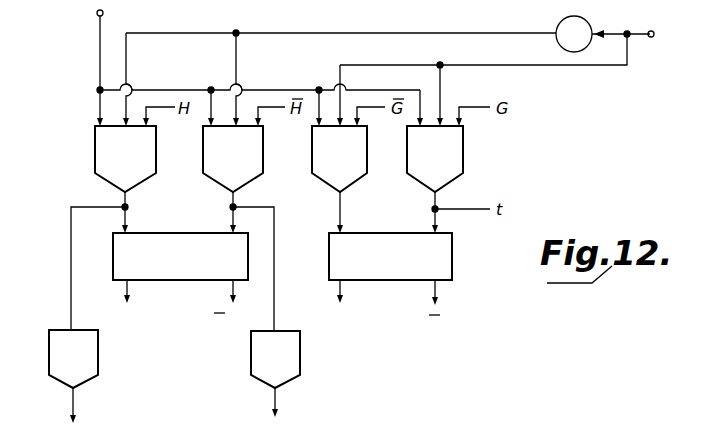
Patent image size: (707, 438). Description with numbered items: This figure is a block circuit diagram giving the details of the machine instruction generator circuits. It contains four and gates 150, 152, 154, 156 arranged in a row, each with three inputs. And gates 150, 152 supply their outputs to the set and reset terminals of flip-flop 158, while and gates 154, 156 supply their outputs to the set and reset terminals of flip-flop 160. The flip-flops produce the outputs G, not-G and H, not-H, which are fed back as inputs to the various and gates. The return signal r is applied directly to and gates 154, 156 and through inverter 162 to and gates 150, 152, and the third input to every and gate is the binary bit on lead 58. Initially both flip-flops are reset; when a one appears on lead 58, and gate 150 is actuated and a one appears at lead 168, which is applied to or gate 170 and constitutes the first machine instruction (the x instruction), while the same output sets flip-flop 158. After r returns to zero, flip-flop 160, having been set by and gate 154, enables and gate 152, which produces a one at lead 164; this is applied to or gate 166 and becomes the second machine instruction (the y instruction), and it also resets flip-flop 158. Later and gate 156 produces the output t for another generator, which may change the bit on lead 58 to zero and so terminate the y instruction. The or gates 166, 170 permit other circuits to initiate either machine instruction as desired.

The lead 58 is at (97, 16).
The and gate 150 is at (93, 152).
The and gate 152 is at (264, 161).
The and gate 154 is at (352, 185).
The and gate 156 is at (455, 182).
The flip-flop 158 is at (180, 224).
The flip-flop 160 is at (455, 259).
The inverter 162 is at (558, 28).
The lead 164 is at (236, 201).
The or gate 166 is at (250, 357).
The lead 168 is at (118, 198).
The or gate 170 is at (99, 358).